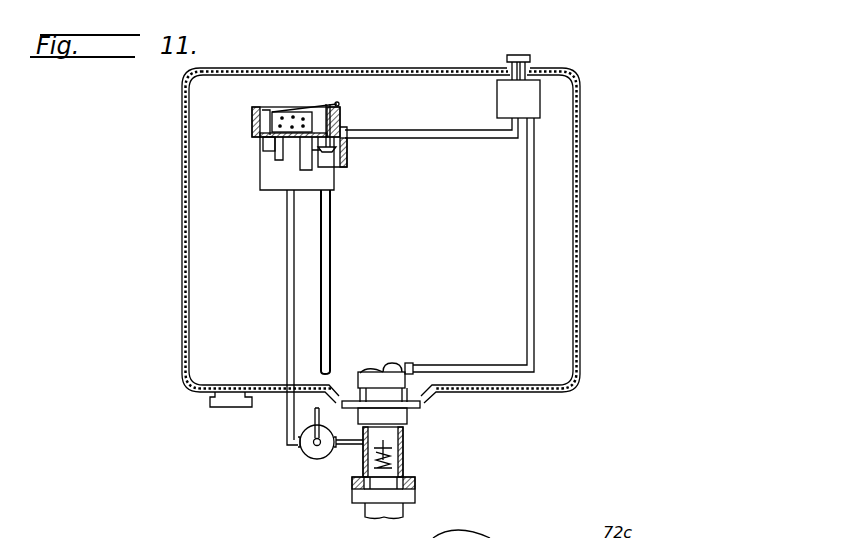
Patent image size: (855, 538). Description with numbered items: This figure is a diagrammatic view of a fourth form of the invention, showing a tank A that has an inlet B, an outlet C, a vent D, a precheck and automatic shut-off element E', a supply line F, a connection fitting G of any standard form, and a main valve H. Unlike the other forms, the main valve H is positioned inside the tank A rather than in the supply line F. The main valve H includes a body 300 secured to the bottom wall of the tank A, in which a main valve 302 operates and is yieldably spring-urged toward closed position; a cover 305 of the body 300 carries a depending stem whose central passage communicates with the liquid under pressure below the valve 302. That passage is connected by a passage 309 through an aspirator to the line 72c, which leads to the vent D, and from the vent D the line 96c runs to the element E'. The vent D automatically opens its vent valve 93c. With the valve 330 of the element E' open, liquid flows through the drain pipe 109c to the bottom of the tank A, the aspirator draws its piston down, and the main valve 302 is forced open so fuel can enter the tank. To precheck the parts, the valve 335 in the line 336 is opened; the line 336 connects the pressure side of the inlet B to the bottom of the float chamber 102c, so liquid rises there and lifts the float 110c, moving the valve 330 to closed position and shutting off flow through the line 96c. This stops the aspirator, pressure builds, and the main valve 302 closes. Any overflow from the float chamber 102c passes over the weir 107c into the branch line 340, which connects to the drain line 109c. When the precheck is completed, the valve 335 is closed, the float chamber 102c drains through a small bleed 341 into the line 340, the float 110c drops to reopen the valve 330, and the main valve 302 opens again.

The tank A is at (578, 245).
The vent valve 93c is at (523, 54).
The vent D is at (527, 100).
The line 96c is at (447, 137).
The line 72c is at (530, 283).
The precheck and automatic shut-off element E' is at (303, 84).
The float 110c is at (283, 107).
The weir 107c is at (267, 120).
The float chamber 102c is at (268, 132).
The bleed 341 is at (270, 153).
The branch line 340 is at (258, 177).
The valve 330 is at (340, 133).
The drain pipe 109c is at (328, 285).
The line 336 is at (288, 422).
The valve 335 is at (308, 452).
The outlet C is at (210, 403).
The body 300 is at (400, 387).
The main valve H is at (378, 367).
The main valve 302 is at (385, 402).
The cover 305 is at (360, 373).
The inlet B is at (402, 440).
The connection fitting G is at (418, 492).
The supply line F is at (402, 513).
The passage 309 is at (478, 528).